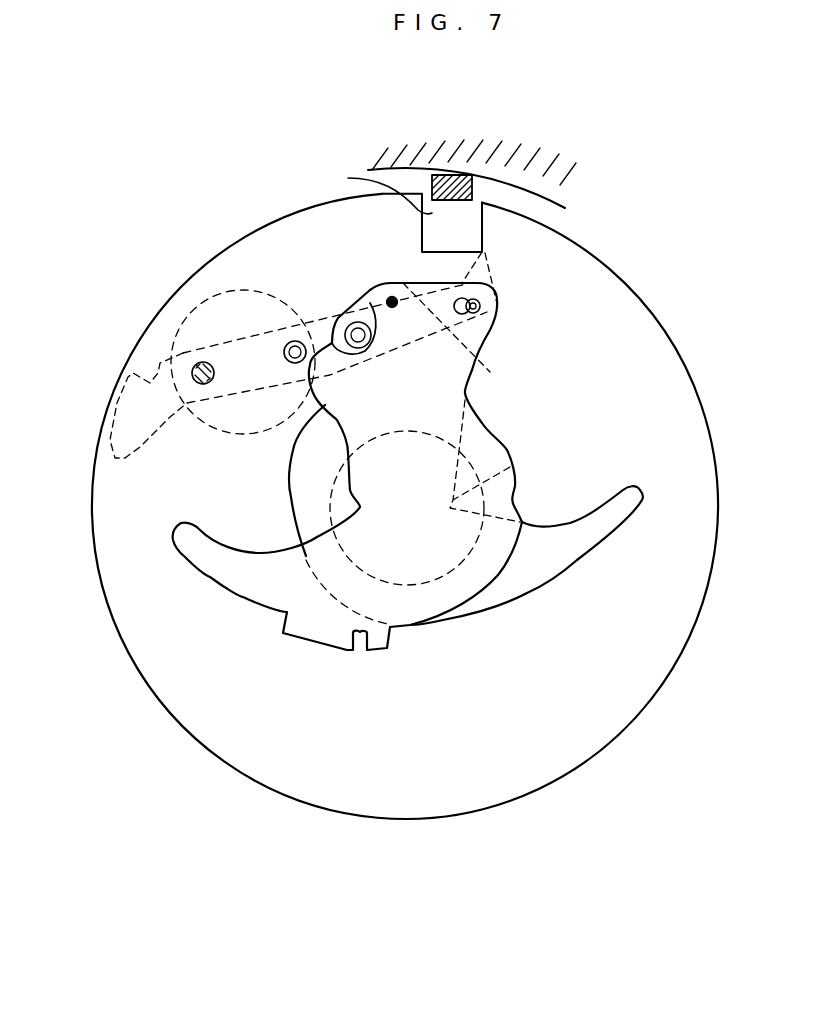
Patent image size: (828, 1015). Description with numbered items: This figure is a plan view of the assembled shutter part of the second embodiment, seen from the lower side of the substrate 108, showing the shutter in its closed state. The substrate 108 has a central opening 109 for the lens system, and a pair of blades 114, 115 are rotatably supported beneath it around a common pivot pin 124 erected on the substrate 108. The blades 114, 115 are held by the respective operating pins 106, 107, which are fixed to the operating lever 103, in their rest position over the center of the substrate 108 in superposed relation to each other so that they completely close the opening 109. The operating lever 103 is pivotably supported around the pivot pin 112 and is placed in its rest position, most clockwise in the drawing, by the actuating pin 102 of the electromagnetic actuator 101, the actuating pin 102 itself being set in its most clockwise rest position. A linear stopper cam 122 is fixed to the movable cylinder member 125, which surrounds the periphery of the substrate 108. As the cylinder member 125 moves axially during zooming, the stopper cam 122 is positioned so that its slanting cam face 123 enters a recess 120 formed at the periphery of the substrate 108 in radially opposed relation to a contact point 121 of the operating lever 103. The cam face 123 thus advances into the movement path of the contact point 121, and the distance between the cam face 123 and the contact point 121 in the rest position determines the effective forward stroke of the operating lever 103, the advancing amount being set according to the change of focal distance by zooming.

The electromagnetic actuator 101 is at (203, 312).
The actuating pin 102 is at (275, 440).
The operating lever 103 is at (117, 404).
The operating pin 106 is at (352, 330).
The operating pin 107 is at (480, 305).
The substrate 108 is at (707, 478).
The central opening 109 is at (527, 450).
The pivot pin 112 is at (200, 385).
The blade 114 is at (197, 557).
The blade 115 is at (628, 491).
The recess 120 is at (472, 232).
The contact point 121 is at (477, 253).
The linear stopper cam 122 is at (473, 177).
The slanting cam face 123 is at (366, 190).
The common pivot pin 124 is at (396, 310).
The movable cylinder member 125 is at (543, 180).